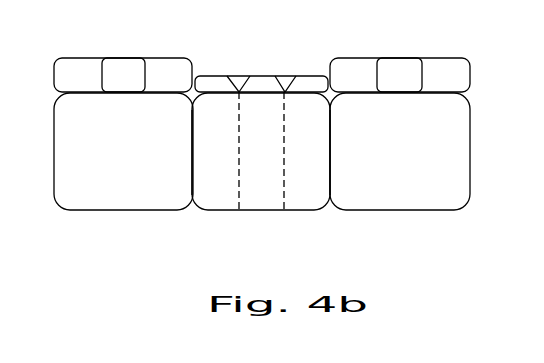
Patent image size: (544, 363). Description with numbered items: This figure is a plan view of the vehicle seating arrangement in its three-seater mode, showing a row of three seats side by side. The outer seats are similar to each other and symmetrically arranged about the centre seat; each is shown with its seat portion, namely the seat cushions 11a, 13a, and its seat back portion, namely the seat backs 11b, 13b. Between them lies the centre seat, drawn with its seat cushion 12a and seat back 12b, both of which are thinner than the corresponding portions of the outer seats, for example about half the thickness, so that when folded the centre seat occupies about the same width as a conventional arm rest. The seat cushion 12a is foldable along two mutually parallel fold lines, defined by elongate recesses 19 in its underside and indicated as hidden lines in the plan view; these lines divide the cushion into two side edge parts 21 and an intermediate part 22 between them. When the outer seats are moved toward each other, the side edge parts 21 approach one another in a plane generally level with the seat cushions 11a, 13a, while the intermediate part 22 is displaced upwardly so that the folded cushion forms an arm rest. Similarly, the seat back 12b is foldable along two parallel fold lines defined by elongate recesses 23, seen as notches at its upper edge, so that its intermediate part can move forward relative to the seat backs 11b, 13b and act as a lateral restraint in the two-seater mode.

The seat portion 11a is at (92, 182).
The seat back portion 11b is at (84, 70).
The seat cushion 12a is at (265, 132).
The seat back 12b is at (210, 74).
The seat portion 13a is at (438, 182).
The seat back portion 13b is at (433, 70).
The elongate recesses 19 is at (283, 148).
The side edge parts 21 is at (193, 167).
The intermediate part 22 is at (272, 193).
The elongate recesses 23 is at (290, 83).